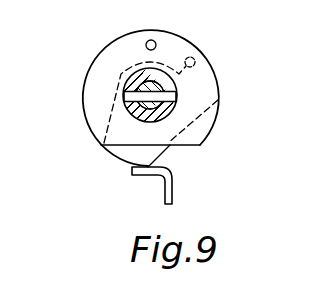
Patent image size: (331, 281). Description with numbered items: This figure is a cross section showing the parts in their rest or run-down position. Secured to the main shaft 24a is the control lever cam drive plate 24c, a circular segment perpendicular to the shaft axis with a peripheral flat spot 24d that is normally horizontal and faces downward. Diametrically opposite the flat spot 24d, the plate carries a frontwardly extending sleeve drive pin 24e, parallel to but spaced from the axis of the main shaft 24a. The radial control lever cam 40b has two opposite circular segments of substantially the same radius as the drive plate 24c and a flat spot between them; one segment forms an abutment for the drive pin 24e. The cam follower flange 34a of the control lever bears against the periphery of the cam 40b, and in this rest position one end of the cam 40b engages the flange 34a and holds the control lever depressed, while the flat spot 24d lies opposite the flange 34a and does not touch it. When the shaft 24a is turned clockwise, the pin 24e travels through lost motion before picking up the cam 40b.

The main shaft 24a is at (142, 92).
The control lever cam drive plate 24c is at (181, 44).
The peripheral flat spot 24d is at (188, 147).
The sleeve drive pin 24e is at (148, 41).
The cam follower flange 34a is at (139, 177).
The radial control lever cam 40b is at (108, 153).